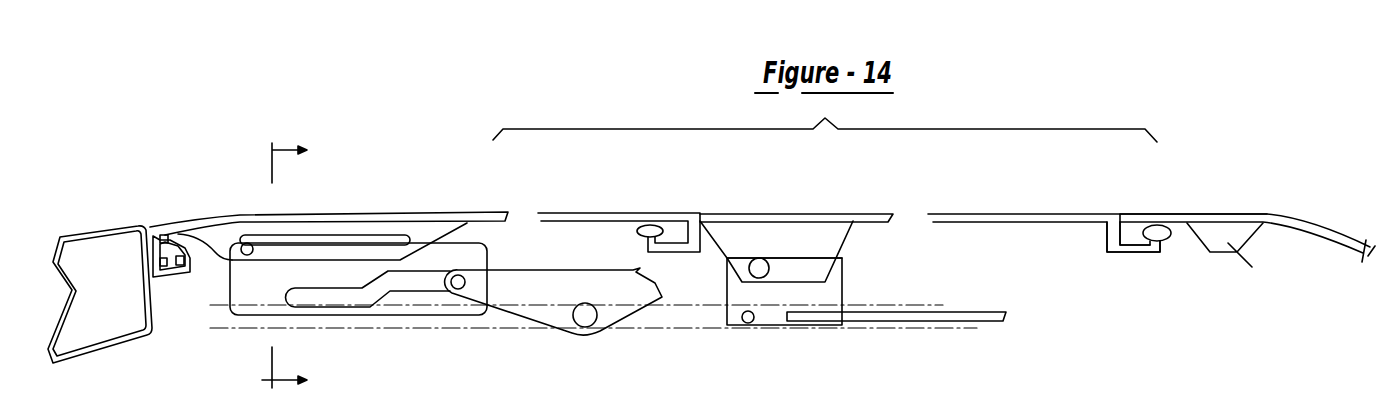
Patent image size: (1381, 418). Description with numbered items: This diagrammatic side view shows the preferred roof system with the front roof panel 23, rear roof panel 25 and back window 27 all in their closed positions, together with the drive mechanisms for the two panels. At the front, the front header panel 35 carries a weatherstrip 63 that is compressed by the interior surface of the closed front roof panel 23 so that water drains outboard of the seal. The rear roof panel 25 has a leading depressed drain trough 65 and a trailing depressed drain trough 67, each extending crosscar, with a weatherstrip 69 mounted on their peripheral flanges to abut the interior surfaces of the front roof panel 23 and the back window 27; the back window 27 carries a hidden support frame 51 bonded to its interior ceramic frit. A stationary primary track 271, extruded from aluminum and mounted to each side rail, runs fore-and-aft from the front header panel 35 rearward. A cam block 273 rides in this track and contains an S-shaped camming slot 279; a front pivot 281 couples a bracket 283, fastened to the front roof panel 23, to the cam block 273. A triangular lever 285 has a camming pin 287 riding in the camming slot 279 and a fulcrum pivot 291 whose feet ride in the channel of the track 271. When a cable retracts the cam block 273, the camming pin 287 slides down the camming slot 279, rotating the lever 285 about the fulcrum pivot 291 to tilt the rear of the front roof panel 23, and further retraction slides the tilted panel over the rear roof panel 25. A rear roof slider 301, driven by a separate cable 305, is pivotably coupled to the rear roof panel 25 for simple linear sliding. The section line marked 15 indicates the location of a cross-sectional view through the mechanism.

The section line 15- 15 is at (301, 271).
The front roof panel 23 is at (240, 217).
The rear roof panel 25 is at (953, 215).
The back window 27 is at (1312, 230).
The front header panel 35 is at (112, 228).
The support frame 51 is at (1252, 267).
The weatherstrip 63 is at (193, 268).
The leading depressed drain trough 65 is at (673, 248).
The trailing depressed drain trough 67 is at (1130, 250).
The weatherstrip 69 is at (1168, 238).
The primary track 271 is at (662, 320).
The cam block 273 is at (252, 287).
The camming slot 279 is at (380, 310).
The front pivot 281 is at (215, 235).
The bracket 283 is at (420, 223).
The lever 285 is at (537, 287).
The camming pin 287 is at (458, 275).
The fulcrum pivot 291 is at (585, 320).
The rear roof slider 301 is at (768, 300).
The cable 305 is at (988, 318).